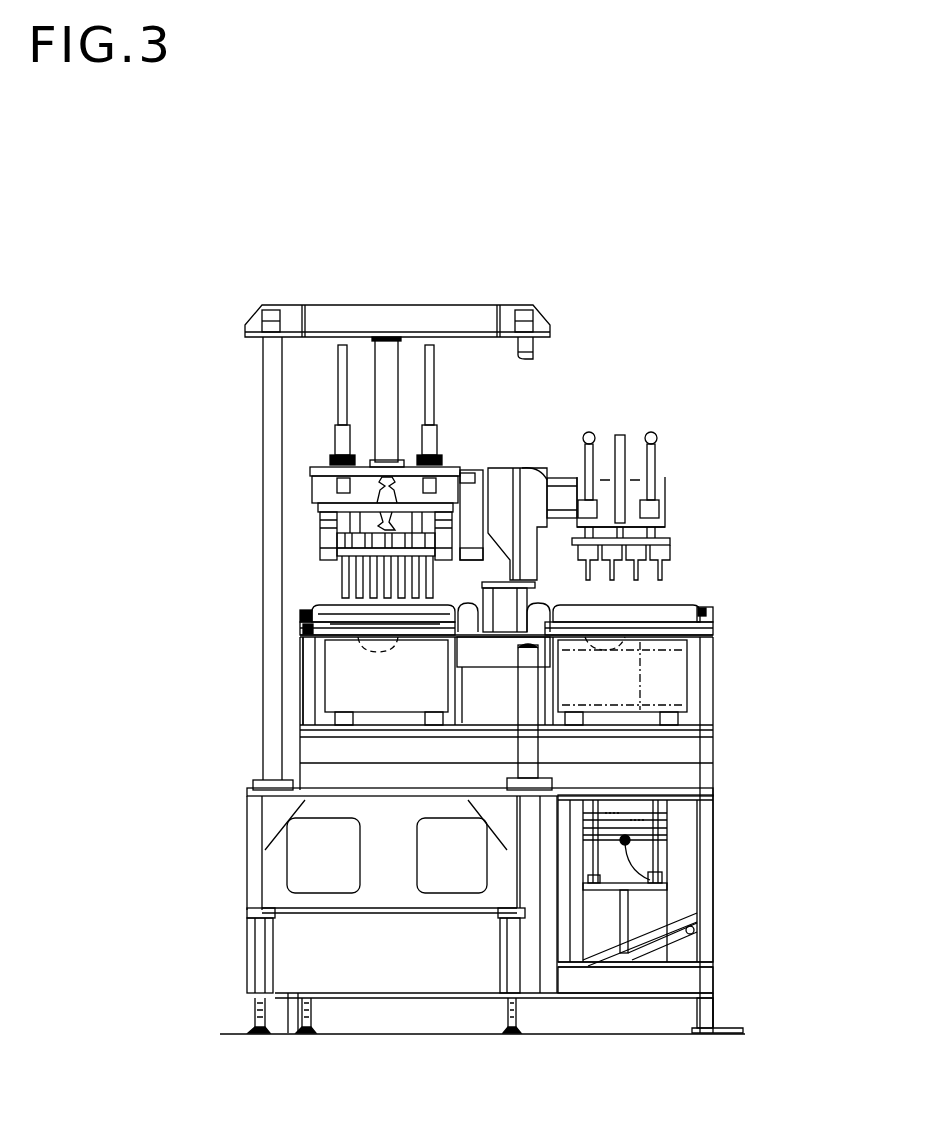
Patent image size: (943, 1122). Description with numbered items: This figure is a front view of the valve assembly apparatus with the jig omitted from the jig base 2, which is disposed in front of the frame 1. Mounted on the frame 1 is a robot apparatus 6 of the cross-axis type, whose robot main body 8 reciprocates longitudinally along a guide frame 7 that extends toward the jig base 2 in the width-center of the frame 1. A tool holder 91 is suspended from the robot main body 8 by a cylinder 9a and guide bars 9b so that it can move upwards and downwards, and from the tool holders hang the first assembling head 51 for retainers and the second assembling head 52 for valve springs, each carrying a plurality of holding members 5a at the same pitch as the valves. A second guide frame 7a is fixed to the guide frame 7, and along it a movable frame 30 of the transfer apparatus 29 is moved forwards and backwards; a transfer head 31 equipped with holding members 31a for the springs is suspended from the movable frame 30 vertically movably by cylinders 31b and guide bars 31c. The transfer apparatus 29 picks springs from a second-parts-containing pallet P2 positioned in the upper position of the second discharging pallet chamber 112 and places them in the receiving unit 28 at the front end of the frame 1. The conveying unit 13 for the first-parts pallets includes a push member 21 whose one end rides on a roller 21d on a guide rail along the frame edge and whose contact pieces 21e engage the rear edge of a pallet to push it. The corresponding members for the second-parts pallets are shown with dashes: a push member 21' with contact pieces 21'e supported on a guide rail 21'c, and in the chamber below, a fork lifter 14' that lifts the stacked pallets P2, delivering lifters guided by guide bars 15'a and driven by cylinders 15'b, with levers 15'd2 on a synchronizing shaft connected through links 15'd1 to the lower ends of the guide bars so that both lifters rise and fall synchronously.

The cylinder 9a is at (388, 340).
The guide bar 9b is at (338, 398).
The robot apparatus 6 is at (318, 460).
The tool holder 91 is at (316, 507).
The second assembling head 52 is at (330, 543).
The first assembling head 51 is at (340, 566).
The holding member 5a is at (423, 578).
The robot main body 8 is at (462, 474).
The guide frame 7 is at (496, 470).
The second guide frame 7a is at (531, 468).
The movable frame 30 is at (560, 500).
The transfer apparatus 29 is at (673, 502).
The guide bar 31c is at (593, 440).
The cylinder 31b is at (622, 435).
The transfer head 31 is at (672, 542).
The holding member 31a is at (660, 572).
The conveying unit 13 is at (312, 612).
The roller 21d is at (300, 630).
The receiving unit 28 is at (333, 680).
The contact piece 21e is at (410, 640).
The push member 21 is at (385, 665).
The frame 1 is at (305, 700).
The jig base 2 is at (310, 795).
The guide rail 21'c is at (741, 625).
The push member 21' is at (622, 672).
The contact piece 21'e is at (612, 658).
The second-parts-containing pallet P2 is at (690, 800).
The guide bar 15'a is at (625, 810).
The second discharging pallet chamber 112 is at (640, 840).
The cylinder 15'b is at (681, 910).
The link 15'd1 is at (682, 935).
The lever 15'd2 is at (706, 951).
The fork lifter 14' is at (635, 1016).